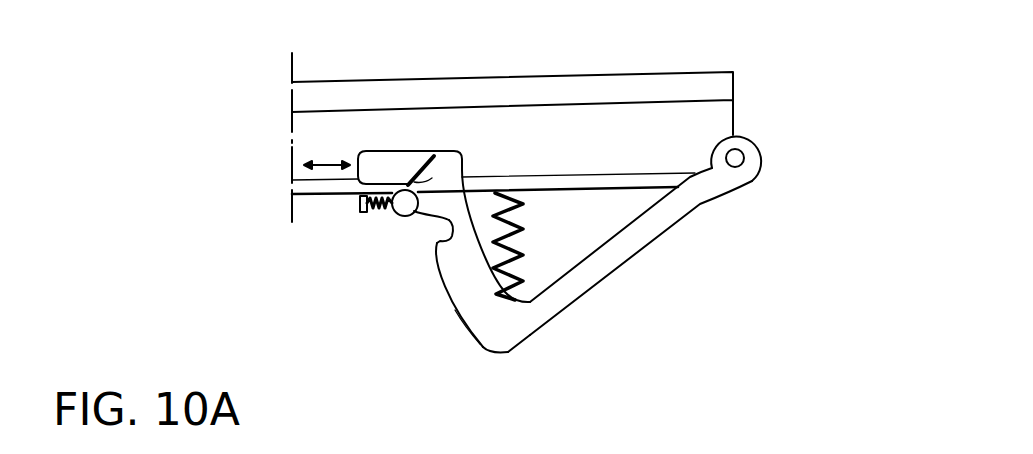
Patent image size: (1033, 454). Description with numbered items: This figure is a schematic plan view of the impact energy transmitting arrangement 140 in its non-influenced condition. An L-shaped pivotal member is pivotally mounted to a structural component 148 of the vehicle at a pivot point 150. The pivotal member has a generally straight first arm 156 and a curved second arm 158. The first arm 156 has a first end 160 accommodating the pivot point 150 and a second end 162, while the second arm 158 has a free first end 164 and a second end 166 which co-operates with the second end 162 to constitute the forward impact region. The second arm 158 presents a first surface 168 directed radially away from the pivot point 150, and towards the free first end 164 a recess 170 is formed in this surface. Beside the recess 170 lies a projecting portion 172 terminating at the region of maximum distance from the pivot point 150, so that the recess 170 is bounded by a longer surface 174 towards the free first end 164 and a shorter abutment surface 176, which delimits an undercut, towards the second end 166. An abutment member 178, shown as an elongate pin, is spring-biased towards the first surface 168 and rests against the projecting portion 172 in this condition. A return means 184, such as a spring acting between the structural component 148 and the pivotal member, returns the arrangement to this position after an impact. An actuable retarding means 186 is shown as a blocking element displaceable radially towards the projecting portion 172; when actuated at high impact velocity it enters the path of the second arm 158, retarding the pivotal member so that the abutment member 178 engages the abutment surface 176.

The impact energy transmitting arrangement 140 is at (748, 308).
The structural component 148 is at (688, 87).
The pivot point 150 is at (744, 157).
The first arm 156 is at (612, 258).
The second arm 158 is at (460, 288).
The first end 160 is at (752, 182).
The second end 162 is at (512, 338).
The free first end 164 is at (453, 163).
The second end 166 is at (486, 350).
The first surface 168 is at (465, 320).
The recess 170 is at (428, 216).
The projecting portion 172 is at (423, 182).
The longer surface 174 is at (392, 211).
The abutment surface 176 is at (433, 240).
The abutment member 178 is at (405, 203).
The return means 184 is at (522, 235).
The actuable retarding means 186 is at (393, 160).